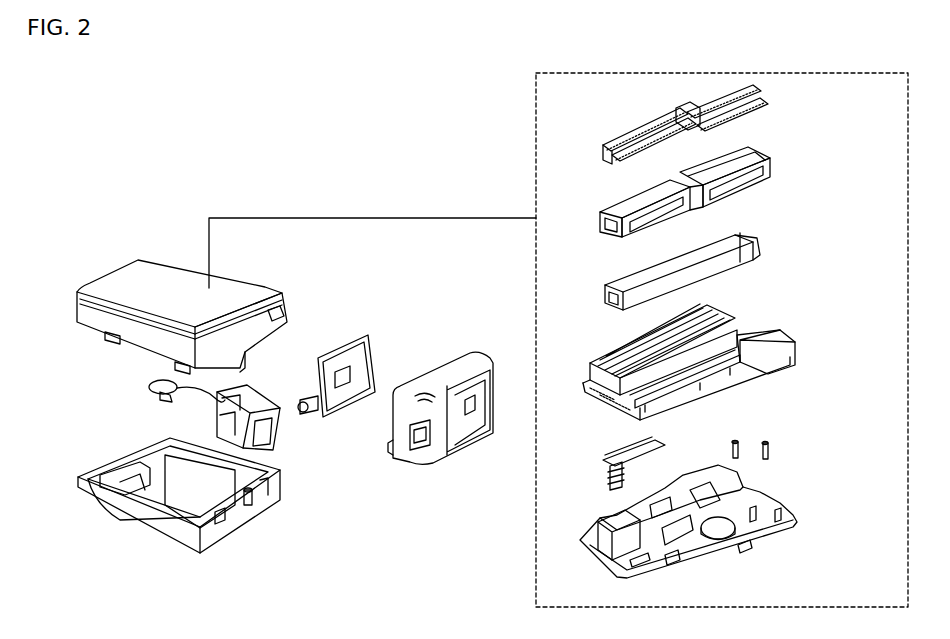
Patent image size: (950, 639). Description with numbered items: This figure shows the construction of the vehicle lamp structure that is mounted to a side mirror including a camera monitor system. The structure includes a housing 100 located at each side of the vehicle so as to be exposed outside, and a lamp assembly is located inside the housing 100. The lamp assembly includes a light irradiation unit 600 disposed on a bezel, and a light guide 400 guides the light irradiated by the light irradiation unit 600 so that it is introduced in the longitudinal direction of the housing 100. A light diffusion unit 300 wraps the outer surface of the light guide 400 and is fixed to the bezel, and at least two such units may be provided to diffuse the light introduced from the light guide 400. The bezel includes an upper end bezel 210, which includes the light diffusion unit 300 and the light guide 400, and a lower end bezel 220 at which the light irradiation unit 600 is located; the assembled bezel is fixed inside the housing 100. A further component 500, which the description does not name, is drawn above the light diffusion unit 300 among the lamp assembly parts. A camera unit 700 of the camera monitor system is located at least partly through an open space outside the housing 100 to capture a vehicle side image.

The housing 100 is at (90, 318).
The upper end bezel 210 is at (763, 340).
The lower end bezel 220 is at (708, 545).
The light diffusion unit 300 is at (770, 180).
The light guide 400 is at (760, 245).
The pin header connector 500 is at (753, 120).
The light irradiation unit 600 is at (770, 452).
The camera unit 700 is at (280, 437).